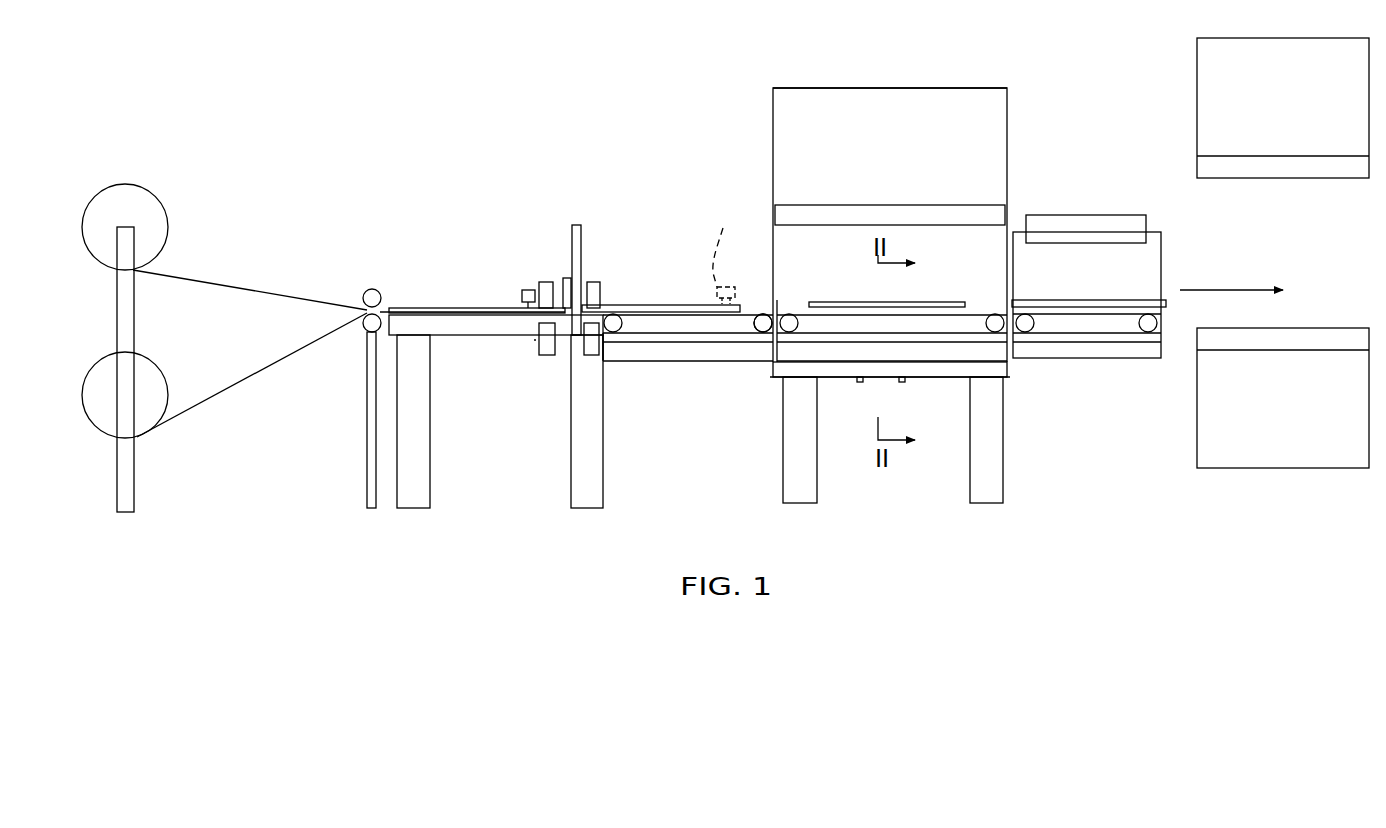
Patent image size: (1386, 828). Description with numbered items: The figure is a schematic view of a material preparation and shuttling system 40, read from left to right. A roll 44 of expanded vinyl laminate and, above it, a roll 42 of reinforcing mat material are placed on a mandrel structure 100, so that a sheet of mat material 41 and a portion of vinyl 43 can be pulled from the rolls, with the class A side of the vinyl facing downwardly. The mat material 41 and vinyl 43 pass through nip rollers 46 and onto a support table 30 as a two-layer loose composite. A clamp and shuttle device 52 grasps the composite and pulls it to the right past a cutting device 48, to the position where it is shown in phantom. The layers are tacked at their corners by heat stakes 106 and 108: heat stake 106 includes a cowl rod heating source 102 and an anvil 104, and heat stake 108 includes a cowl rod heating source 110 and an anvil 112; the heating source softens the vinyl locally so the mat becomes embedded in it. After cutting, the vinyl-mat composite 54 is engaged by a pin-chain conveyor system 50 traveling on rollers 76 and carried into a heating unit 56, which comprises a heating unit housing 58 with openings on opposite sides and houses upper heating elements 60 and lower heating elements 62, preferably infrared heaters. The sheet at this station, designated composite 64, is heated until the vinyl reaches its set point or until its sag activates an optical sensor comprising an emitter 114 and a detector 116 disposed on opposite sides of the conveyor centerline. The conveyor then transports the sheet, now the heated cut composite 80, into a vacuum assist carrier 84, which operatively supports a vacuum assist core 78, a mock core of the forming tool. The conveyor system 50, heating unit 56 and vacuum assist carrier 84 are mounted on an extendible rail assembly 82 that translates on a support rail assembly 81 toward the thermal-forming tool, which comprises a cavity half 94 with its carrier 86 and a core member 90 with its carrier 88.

The support table 30 is at (432, 370).
The material preparation and shuttling system 40 is at (505, 145).
The mat material 41 is at (230, 292).
The roll of reinforcing mat material 42 is at (172, 184).
The vinyl 43 is at (258, 376).
The roll of expanded vinyl laminate 44 is at (160, 440).
The nip rollers 46 is at (362, 292).
The cutting device 48 is at (586, 235).
The pin-chain conveyor system 50 is at (763, 305).
The clamp and shuttle device 52 is at (522, 290).
The vinyl-mat composite 54 is at (672, 303).
The heating unit 56 is at (1018, 102).
The heating unit housing 58 is at (902, 88).
The upper heating elements 60 is at (822, 205).
The lower heating elements 62 is at (958, 378).
The composite 64 is at (945, 302).
The rollers 76 is at (618, 331).
The vacuum assist core 78 is at (1148, 222).
The heated cut composite 80 is at (1100, 300).
The support rail assembly 81 is at (690, 363).
The extendible rail assembly 82 is at (1075, 345).
The vacuum assist carrier 84 is at (1162, 254).
The carrier 86 is at (1277, 470).
The carrier 88 is at (1217, 38).
The core member 90 is at (1245, 180).
The cavity half 94 is at (1305, 328).
The mandrel structure 100 is at (136, 494).
The cowl rod heating source 102 is at (548, 358).
The anvil 104 is at (545, 280).
The heat stake 106 is at (534, 346).
The heat stake 108 is at (588, 362).
The cowl rod heating source 110 is at (606, 357).
The anvil 112 is at (600, 286).
The emitter 114 is at (860, 383).
The detector 116 is at (903, 383).